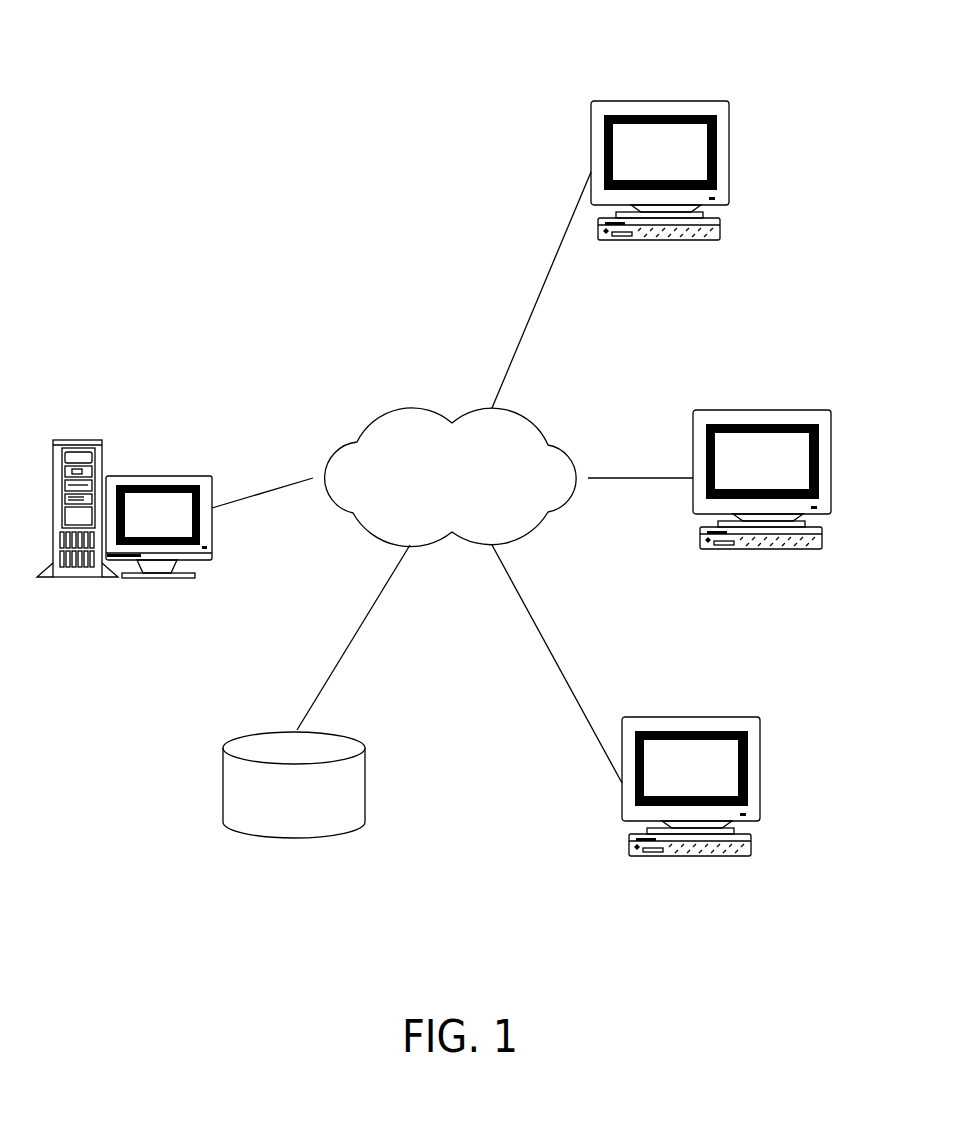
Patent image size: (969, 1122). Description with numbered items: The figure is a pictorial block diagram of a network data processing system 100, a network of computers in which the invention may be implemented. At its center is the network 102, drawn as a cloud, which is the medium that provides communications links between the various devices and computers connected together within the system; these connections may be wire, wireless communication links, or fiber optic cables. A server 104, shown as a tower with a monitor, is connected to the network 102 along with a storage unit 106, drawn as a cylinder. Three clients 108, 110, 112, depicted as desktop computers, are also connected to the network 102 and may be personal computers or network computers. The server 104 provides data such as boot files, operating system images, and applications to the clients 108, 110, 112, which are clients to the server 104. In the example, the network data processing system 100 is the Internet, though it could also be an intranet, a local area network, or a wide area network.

The network data processing system 100 is at (433, 789).
The network 102 is at (410, 408).
The server 104 is at (122, 480).
The storage unit 106 is at (277, 825).
The client 108 is at (598, 110).
The client 110 is at (702, 422).
The client 112 is at (752, 727).